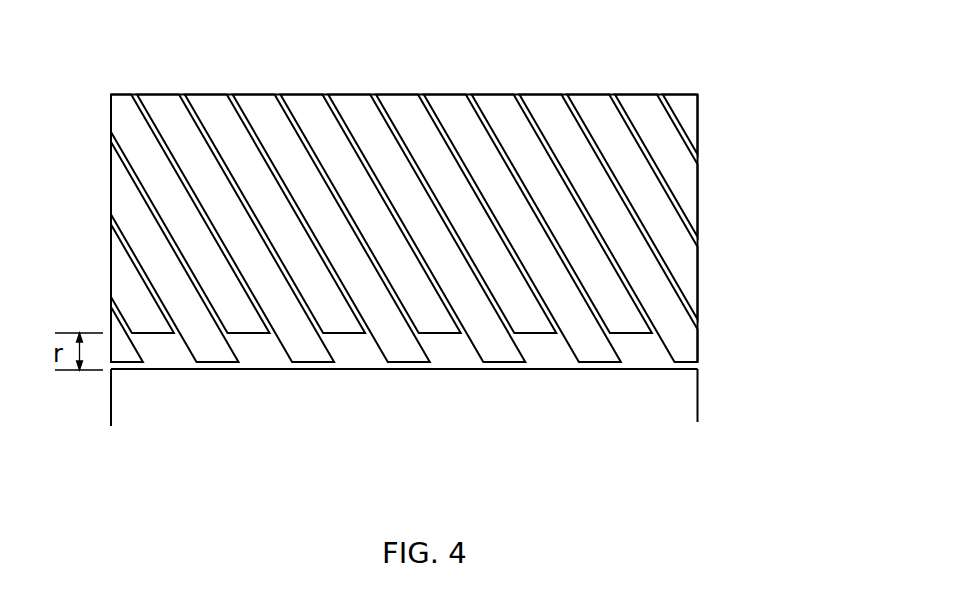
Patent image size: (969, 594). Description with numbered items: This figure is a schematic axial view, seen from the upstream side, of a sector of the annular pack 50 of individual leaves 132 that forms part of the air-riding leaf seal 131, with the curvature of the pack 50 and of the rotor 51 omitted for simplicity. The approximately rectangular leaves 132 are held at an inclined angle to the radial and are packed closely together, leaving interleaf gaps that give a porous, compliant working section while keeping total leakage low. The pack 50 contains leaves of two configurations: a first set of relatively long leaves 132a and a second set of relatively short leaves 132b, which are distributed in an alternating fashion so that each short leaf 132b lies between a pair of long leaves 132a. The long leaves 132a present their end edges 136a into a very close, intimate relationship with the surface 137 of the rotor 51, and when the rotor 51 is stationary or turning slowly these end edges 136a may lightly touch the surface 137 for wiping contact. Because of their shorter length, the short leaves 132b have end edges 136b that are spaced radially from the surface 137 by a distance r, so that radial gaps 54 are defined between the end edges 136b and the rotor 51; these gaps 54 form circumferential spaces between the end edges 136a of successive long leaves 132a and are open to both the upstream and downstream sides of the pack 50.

The pack of leaves 50 is at (638, 92).
The rotor 51 is at (655, 392).
The radial gaps 54 is at (250, 348).
The leaf seal 131 is at (715, 333).
The leaves 132 is at (405, 110).
The long leaves 132a is at (300, 350).
The short leaves 132b is at (533, 318).
The end edges of long leaves 136a is at (217, 363).
The end edges of short leaves 136b is at (154, 335).
The rotor surface 137 is at (650, 362).